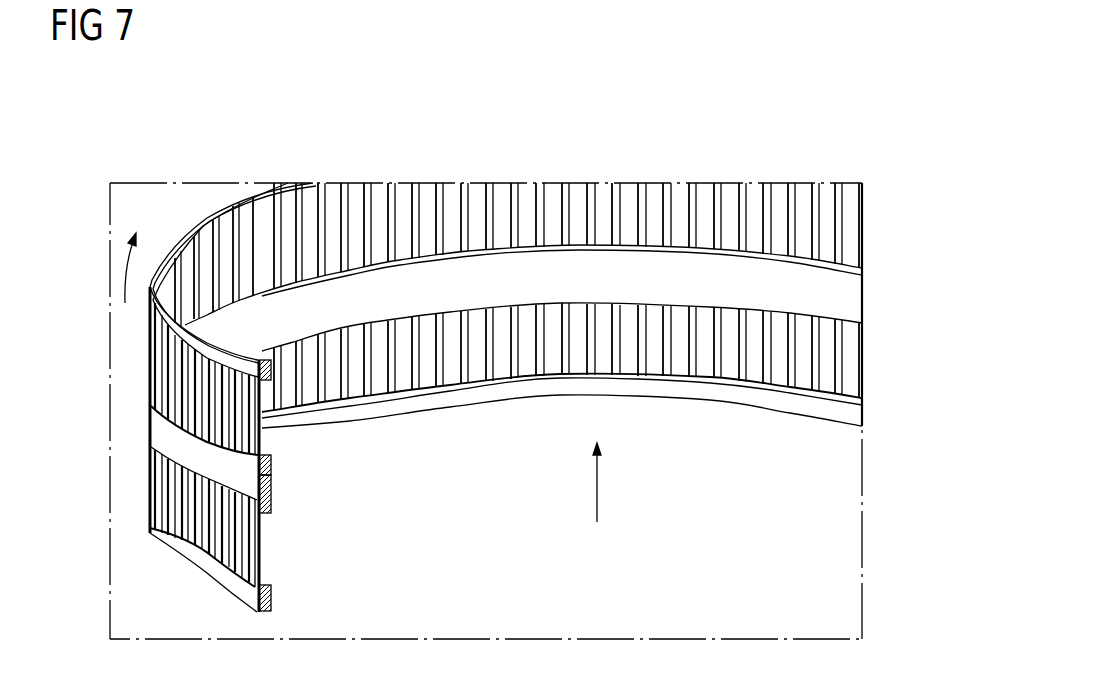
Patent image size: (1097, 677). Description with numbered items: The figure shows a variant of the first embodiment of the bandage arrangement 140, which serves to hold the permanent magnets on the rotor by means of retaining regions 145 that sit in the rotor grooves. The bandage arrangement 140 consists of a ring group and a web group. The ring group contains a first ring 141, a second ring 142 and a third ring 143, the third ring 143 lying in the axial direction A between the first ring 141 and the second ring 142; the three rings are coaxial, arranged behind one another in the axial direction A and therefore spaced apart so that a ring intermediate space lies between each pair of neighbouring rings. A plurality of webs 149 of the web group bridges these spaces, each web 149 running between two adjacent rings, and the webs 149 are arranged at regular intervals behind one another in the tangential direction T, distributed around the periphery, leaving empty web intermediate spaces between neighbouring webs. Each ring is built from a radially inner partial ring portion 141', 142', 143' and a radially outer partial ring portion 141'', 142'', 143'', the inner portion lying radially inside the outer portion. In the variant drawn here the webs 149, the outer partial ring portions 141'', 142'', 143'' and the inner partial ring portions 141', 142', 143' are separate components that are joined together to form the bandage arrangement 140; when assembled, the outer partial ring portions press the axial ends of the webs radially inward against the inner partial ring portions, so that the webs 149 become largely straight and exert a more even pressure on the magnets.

The bandage arrangement 140 is at (826, 104).
The first ring 141 is at (562, 440).
The radially inner partial ring portion of the first ring 141' is at (307, 606).
The radially outer partial ring portion of the first ring 141'' is at (198, 577).
The second ring 142 is at (233, 241).
The radially inner partial ring portion of the second ring 142' is at (228, 256).
The radially outer partial ring portion of the second ring 142'' is at (263, 341).
The third ring 143 is at (555, 375).
The radially inner partial ring portion of the third ring 143' is at (305, 466).
The radially outer partial ring portion of the third ring 143'' is at (309, 496).
The retaining regions 145 is at (228, 549).
The webs 149 is at (225, 420).
The tangential direction T is at (122, 272).
The axial direction A is at (599, 520).